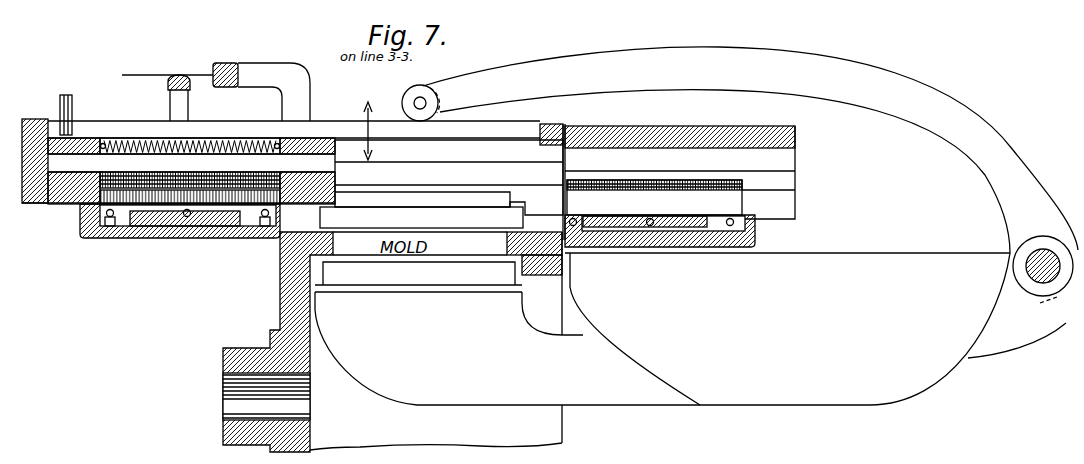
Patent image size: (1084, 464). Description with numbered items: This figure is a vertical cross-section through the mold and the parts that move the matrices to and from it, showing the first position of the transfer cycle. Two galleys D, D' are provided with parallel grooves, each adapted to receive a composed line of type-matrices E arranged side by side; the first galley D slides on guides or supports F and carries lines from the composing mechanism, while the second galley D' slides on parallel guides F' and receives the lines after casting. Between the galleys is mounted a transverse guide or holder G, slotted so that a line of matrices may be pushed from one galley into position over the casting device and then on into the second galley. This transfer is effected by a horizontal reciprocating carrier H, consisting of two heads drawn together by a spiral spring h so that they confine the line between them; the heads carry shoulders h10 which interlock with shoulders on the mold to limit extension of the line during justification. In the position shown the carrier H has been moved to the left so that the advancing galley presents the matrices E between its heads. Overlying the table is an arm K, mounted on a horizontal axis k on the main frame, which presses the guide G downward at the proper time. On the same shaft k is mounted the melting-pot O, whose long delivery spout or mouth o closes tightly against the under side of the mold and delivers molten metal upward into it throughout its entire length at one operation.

The horizontal reciprocating carrier H is at (70, 192).
The spiral spring h is at (227, 138).
The shoulders h10 is at (277, 203).
The galley D is at (189, 228).
The type-matrices E is at (170, 193).
The guides or supports F is at (180, 235).
The transverse guide or holder G is at (527, 125).
The overlying arm K is at (740, 202).
The horizontal axis k is at (1043, 250).
The second galley D' is at (654, 197).
The guides F' is at (660, 243).
The delivery spout or mouth o is at (507, 333).
The melting-pot O is at (787, 329).